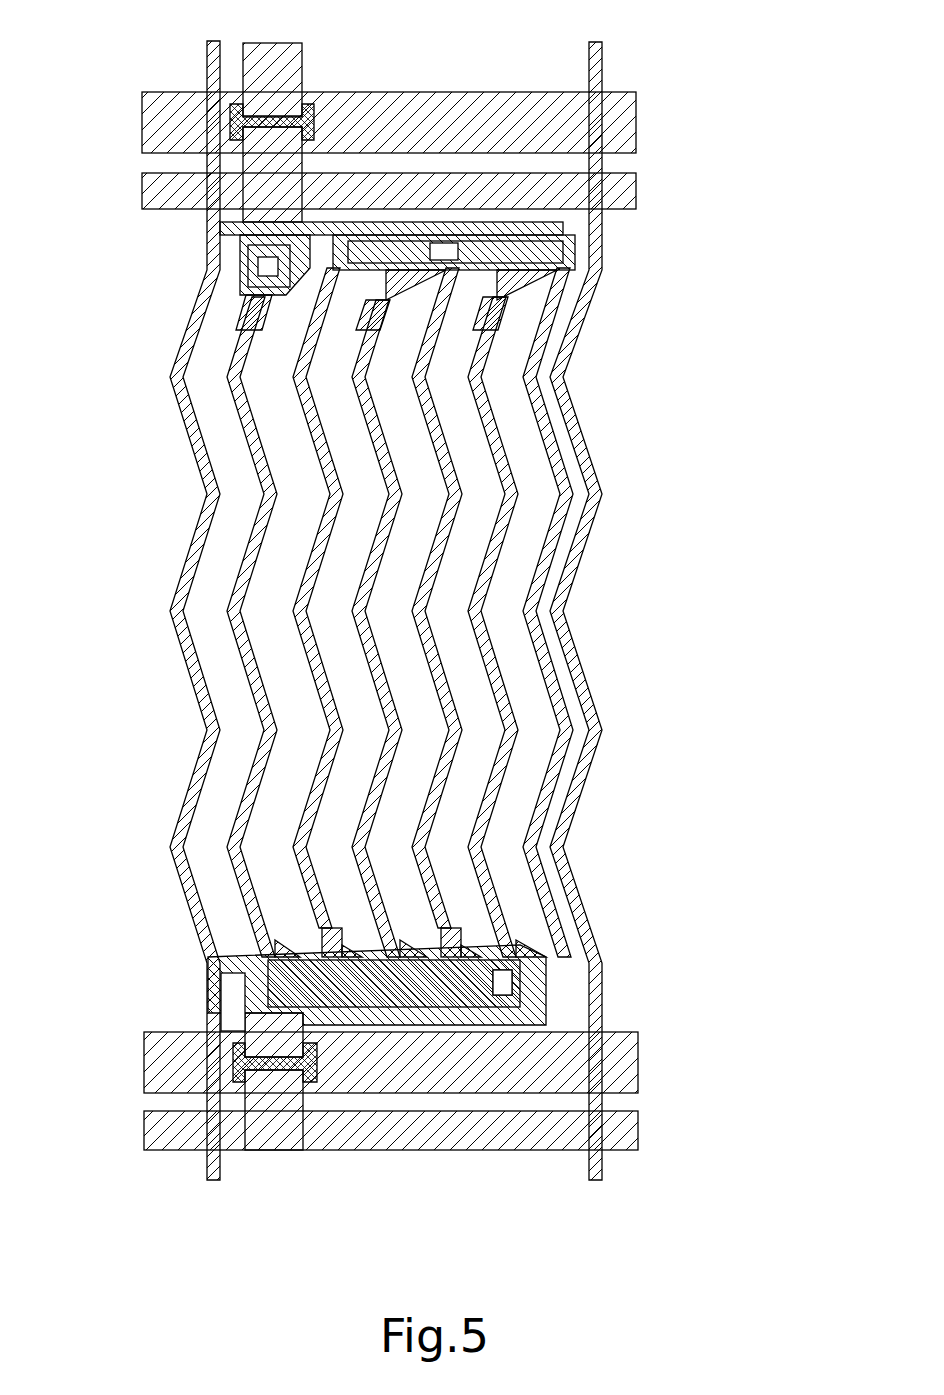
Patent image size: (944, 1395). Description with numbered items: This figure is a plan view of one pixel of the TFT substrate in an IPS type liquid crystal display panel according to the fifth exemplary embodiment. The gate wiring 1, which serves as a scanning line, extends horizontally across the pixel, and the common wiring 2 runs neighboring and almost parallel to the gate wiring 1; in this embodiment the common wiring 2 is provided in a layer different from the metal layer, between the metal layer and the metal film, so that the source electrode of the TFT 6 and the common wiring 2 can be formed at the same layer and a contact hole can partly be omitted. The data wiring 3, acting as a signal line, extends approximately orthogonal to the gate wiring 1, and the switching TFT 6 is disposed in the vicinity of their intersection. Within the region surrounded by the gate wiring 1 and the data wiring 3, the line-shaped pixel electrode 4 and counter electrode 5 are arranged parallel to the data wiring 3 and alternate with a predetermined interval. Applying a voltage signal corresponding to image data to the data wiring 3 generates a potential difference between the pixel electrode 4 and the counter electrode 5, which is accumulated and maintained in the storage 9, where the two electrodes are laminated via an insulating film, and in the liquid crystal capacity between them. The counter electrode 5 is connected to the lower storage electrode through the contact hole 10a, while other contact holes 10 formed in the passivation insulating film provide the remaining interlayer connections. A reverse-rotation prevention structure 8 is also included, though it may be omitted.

The gate wiring 1 is at (636, 113).
The common wiring 2 is at (636, 185).
The data wiring 3 is at (207, 62).
The pixel electrode 4 is at (483, 405).
The counter electrode 5 is at (445, 540).
The TFT 6 is at (316, 1082).
The reverse-rotation prevention structure 8 is at (477, 937).
The storage 9 is at (245, 990).
The contact hole 10 is at (268, 266).
The contact hole 10a is at (445, 250).